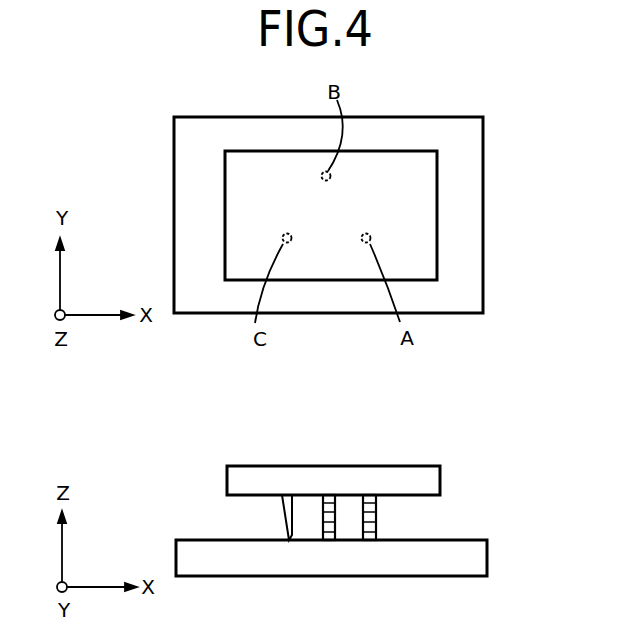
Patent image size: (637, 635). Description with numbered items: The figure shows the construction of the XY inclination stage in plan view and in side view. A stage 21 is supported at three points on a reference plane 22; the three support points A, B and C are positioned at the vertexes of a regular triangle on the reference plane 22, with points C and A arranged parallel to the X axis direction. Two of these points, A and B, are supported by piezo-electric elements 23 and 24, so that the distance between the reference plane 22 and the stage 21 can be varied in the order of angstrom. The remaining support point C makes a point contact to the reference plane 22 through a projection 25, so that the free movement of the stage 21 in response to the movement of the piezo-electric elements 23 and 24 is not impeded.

The stage 21 is at (437, 197).
The reference plane 22 is at (469, 270).
The piezo-electric element 23 is at (377, 521).
The piezo-electric element 24 is at (342, 542).
The projection 25 is at (284, 513).